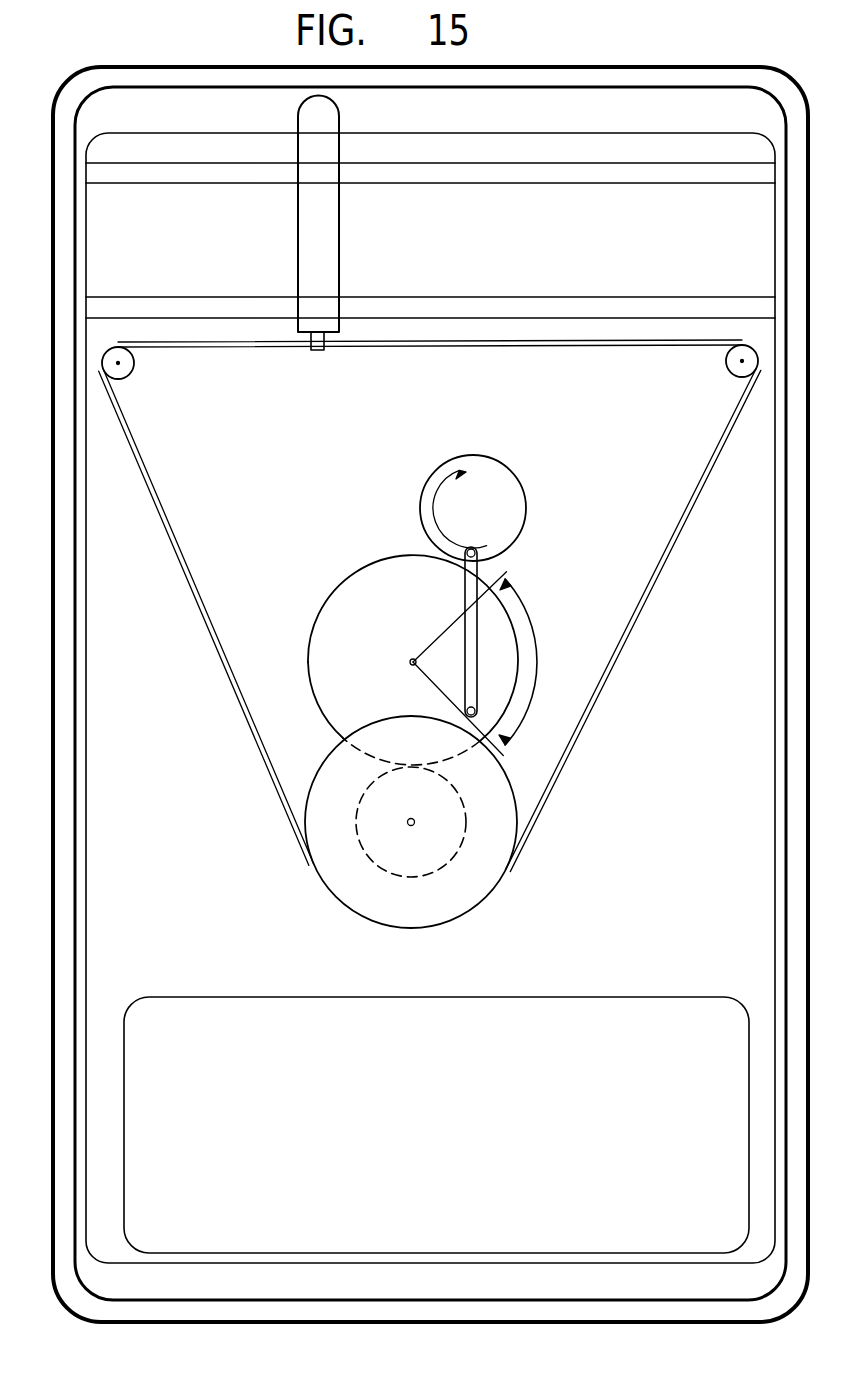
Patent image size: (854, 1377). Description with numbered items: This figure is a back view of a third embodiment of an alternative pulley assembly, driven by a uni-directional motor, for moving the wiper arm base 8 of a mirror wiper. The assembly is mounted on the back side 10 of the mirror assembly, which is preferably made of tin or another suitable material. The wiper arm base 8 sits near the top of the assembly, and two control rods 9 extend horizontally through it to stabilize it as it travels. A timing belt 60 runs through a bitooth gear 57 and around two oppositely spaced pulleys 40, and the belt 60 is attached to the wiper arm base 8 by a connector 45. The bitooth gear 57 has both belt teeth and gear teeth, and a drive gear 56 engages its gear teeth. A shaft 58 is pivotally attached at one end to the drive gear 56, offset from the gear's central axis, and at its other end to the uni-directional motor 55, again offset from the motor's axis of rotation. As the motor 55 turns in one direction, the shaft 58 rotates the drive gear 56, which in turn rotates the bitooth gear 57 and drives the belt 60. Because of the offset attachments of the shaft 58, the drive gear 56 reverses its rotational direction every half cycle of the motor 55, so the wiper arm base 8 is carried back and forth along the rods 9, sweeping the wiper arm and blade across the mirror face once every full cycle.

The back side 10 is at (212, 886).
The wiper arm base 8 is at (331, 214).
The control rods 9 is at (540, 184).
The connector 45 is at (325, 342).
The pulleys 40 is at (134, 368).
The uni-directional motor 55 is at (512, 473).
The drive gear 56 is at (372, 566).
The bitooth gear 57 is at (465, 916).
The shaft 58 is at (478, 573).
The timing belt 60 is at (198, 588).